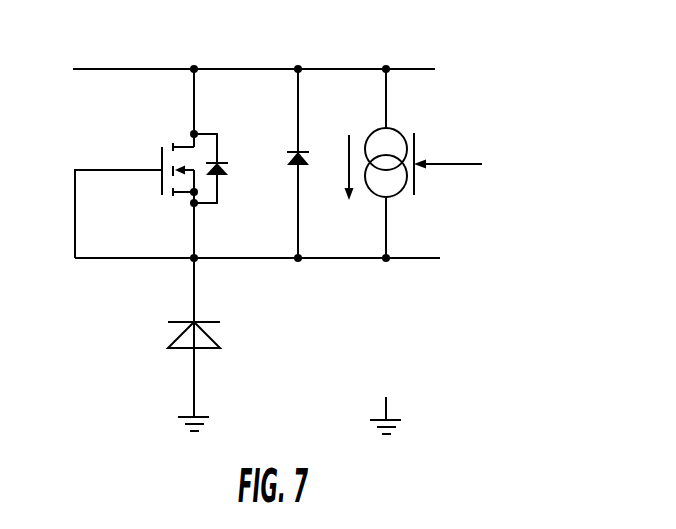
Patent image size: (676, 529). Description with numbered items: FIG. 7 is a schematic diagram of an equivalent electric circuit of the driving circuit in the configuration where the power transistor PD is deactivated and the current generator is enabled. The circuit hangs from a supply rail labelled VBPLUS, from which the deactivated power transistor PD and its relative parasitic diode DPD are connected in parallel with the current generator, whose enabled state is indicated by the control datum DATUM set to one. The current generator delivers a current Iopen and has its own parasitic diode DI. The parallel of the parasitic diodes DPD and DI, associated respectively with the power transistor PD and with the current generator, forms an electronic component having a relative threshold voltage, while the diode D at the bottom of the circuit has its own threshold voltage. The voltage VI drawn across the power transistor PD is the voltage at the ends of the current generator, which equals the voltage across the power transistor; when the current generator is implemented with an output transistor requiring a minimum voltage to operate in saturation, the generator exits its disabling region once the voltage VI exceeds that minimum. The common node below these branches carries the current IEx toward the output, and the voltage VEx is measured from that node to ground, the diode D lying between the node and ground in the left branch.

The V(BPLUS) supply rail VBPLUS is at (254, 53).
The power transistor PD is at (168, 155).
The parasitic diode of the power transistor DPD is at (228, 168).
The parasitic diode of the current generator DI is at (289, 147).
The current source I=I_open Iopen is at (360, 149).
The DATUM=1 control input DATUM is at (478, 164).
The current I(Ex) output node IEx is at (440, 258).
The diode D is at (203, 365).
The voltage V(Ex) VEx is at (386, 274).
The voltage at the ends of the current generator VI is at (75, 77).